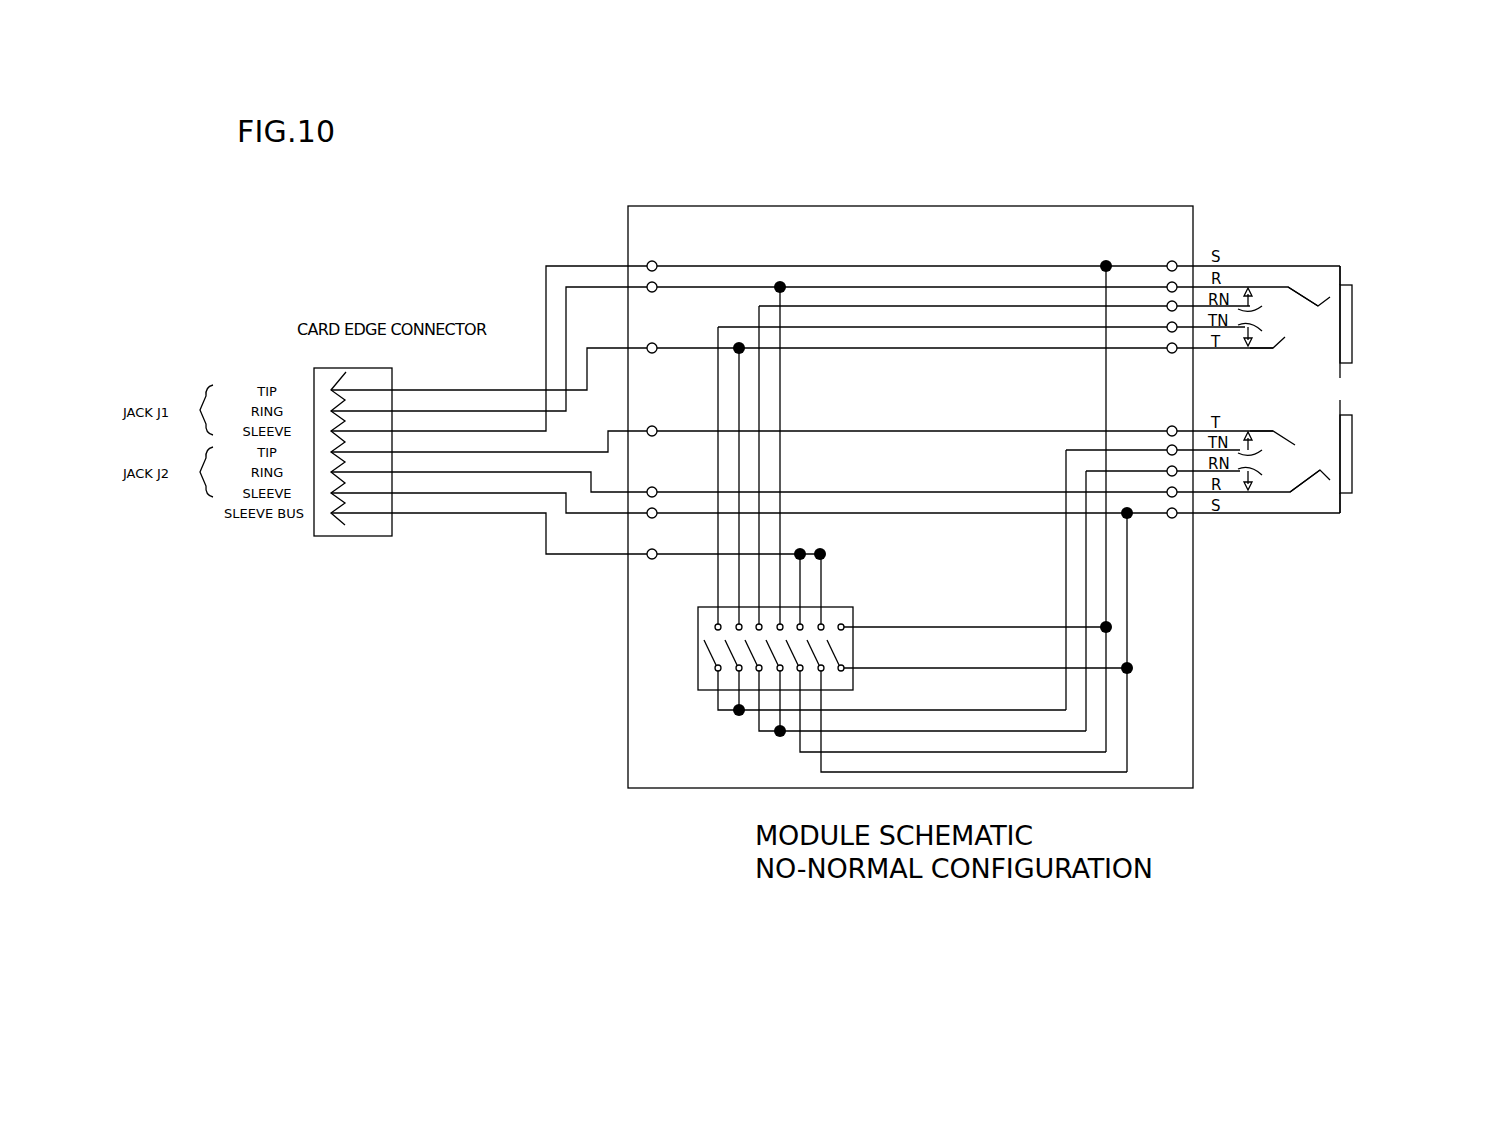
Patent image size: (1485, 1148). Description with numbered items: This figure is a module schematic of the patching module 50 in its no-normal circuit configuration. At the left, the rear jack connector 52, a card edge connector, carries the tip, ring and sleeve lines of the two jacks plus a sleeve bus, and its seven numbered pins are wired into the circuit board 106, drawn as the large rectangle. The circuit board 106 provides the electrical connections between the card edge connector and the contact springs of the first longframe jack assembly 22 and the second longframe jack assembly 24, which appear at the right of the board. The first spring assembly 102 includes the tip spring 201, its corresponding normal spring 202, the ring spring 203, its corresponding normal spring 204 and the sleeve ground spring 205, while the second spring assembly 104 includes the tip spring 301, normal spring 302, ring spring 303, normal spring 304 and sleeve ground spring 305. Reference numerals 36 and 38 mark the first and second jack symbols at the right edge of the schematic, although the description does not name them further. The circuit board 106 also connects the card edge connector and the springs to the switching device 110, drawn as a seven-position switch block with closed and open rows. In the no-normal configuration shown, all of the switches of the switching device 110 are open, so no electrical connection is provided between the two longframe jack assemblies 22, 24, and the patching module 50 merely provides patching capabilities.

The first longframe jack assembly 22 is at (1275, 210).
The second longframe jack assembly 24 is at (1295, 575).
The first jack connector J1 36 is at (1368, 280).
The second jack connector J2 38 is at (1385, 487).
The patching module 50 is at (555, 223).
The rear jack connector 52 is at (352, 537).
The first spring assembly 102 is at (1226, 225).
The second spring assembly 104 is at (1230, 535).
The circuit board 106 is at (953, 205).
The switching device 110 is at (842, 603).
The tip spring 201 is at (1262, 350).
The normal spring 202 is at (1295, 348).
The ring spring 203 is at (1268, 285).
The normal spring 204 is at (1271, 302).
The sleeve ground spring 205 is at (1343, 268).
The tip spring 301 is at (1273, 427).
The normal spring 302 is at (1271, 447).
The ring spring 303 is at (1262, 492).
The normal spring 304 is at (1271, 475).
The sleeve ground spring 305 is at (1343, 513).